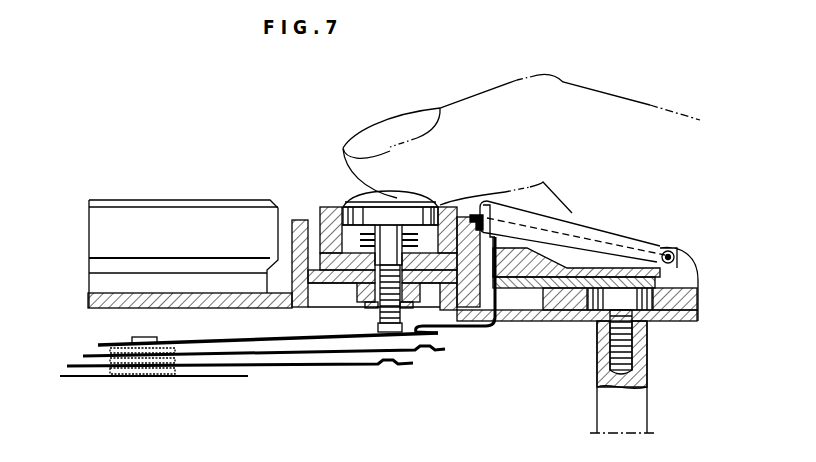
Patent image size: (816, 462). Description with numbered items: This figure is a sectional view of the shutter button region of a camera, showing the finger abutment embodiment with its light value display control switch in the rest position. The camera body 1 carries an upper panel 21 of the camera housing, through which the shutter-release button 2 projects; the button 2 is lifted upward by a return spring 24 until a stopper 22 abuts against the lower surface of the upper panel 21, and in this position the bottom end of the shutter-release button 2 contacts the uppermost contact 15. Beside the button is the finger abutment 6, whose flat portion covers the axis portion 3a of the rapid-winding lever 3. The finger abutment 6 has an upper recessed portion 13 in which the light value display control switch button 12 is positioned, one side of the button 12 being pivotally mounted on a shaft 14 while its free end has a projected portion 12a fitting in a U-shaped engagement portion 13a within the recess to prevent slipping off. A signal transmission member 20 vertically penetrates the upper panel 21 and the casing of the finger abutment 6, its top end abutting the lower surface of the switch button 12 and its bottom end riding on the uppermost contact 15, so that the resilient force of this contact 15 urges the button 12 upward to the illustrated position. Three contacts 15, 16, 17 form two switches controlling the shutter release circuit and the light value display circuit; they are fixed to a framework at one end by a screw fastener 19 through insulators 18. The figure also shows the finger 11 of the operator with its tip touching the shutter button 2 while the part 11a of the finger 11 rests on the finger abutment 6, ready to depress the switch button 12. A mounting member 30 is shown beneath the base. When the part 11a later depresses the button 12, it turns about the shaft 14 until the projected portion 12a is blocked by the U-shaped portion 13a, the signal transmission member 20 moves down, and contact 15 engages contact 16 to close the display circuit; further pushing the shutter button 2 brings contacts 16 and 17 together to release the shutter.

The camera body 1 is at (213, 222).
The shutter-release button 2 is at (395, 193).
The rapid-winding lever 3 is at (700, 303).
The axis portion 3a is at (638, 300).
The finger abutment 6 is at (449, 207).
The finger 11 is at (563, 82).
The part of the finger 11a is at (700, 266).
The light value display control switch button 12 is at (551, 208).
The projected portion 12a is at (476, 214).
The upper recessed portion 13 is at (583, 258).
The U-shaped engagement portion 13a is at (497, 228).
The shaft 14 is at (668, 250).
The uppermost contact 15 is at (440, 336).
The contact 16 is at (445, 352).
The contact 17 is at (408, 368).
The insulators 18 is at (118, 366).
The screw fastener 19 is at (152, 338).
The signal transmission member 20 is at (497, 328).
The upper panel 21 is at (95, 304).
The stopper 22 is at (372, 305).
The return spring 24 is at (345, 210).
The tripod socket rod 30 is at (640, 417).